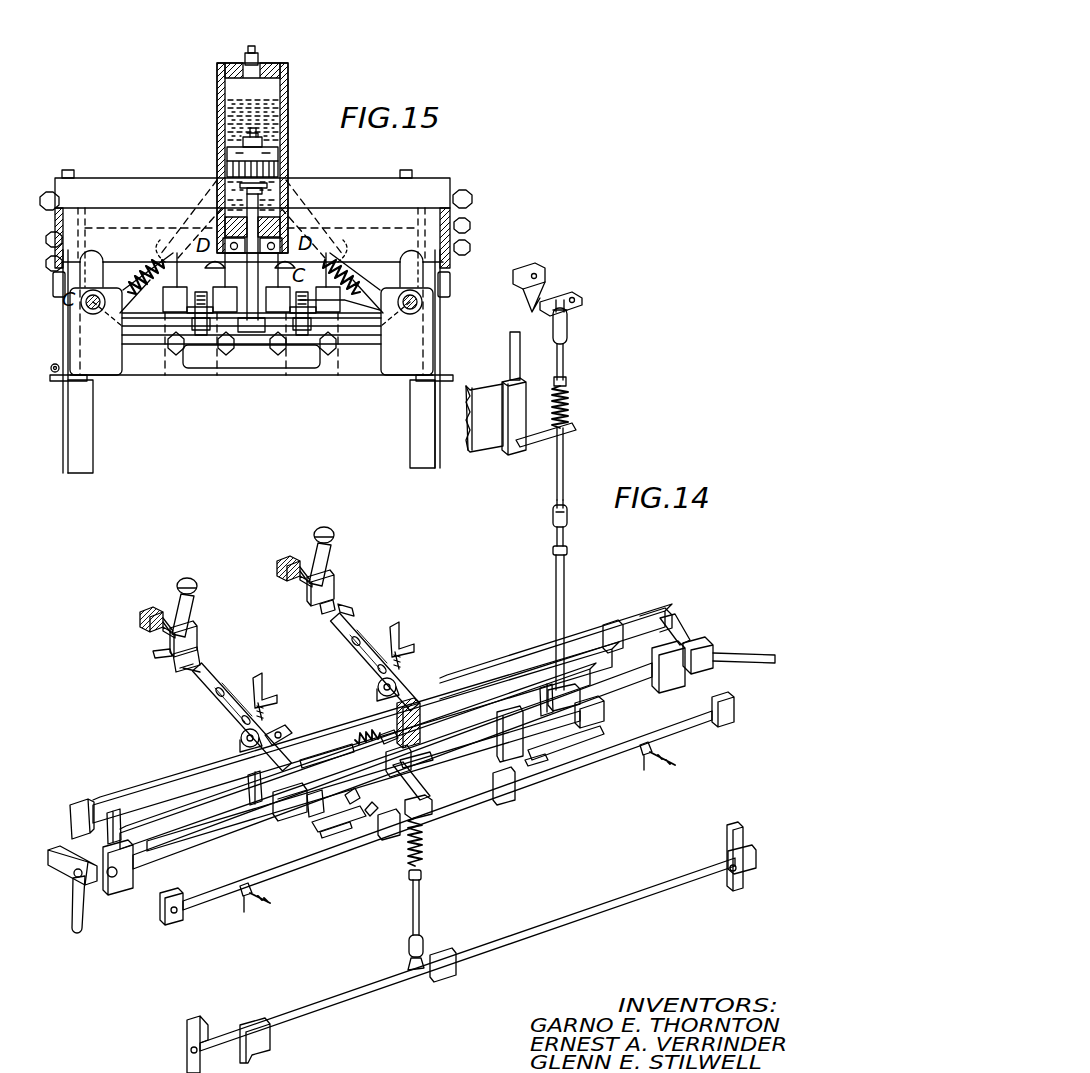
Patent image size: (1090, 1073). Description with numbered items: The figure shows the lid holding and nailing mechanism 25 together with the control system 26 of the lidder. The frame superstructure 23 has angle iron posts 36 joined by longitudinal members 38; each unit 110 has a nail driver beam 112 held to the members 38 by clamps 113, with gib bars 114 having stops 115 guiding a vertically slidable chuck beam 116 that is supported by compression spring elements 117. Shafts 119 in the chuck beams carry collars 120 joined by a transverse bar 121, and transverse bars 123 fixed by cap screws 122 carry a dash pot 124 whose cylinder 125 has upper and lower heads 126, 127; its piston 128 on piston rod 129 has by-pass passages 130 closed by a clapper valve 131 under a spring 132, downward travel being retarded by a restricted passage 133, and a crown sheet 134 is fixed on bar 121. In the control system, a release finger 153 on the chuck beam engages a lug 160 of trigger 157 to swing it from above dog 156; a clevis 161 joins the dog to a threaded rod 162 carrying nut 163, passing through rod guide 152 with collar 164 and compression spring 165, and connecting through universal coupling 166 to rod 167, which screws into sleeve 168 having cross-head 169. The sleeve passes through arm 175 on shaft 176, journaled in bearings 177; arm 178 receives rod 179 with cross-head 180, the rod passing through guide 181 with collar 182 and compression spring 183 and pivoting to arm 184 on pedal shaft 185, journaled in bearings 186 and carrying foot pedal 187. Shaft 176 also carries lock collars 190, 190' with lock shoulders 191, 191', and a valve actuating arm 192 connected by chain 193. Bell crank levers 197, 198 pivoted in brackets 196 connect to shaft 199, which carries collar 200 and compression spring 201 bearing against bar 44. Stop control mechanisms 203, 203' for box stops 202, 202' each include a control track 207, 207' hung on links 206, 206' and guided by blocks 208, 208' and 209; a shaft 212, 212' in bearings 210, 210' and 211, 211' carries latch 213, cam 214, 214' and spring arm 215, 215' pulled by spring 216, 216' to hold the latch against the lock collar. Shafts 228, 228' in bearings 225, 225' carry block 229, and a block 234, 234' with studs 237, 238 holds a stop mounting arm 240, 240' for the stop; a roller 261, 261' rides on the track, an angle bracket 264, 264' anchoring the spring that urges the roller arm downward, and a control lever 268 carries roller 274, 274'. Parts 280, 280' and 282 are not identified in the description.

In FIG. 15, the lid holding and nailing mechanism 25 is at (213, 65).
In FIG. 15, the upper head 126 is at (256, 66).
In FIG. 15, the dash pot 124 is at (300, 84).
In FIG. 15, the cylinder 125 is at (218, 92).
In FIG. 15, the by-pass passages 130 is at (218, 150).
In FIG. 15, the piston 128 is at (227, 163).
In FIG. 15, the spring 132 is at (228, 183).
In FIG. 15, the restricted passage 133 is at (240, 200).
In FIG. 15, the lower head 127 is at (228, 222).
In FIG. 15, the clapper valve 131 is at (283, 184).
In FIG. 15, the nail driver beam 112 is at (372, 186).
In FIG. 15, the transverse bars 123 is at (330, 214).
In FIG. 15, the unit 110 is at (469, 162).
In FIG. 15, the clamps 113 is at (48, 205).
In FIG. 15, the cap screws 122 is at (56, 256).
In FIG. 15, the longitudinal members 38 is at (46, 240).
In FIG. 15, the superstructure 23 is at (58, 472).
In FIG. 15, the compression spring elements 117 is at (142, 270).
In FIG. 15, the piston rod 129 is at (247, 272).
In FIG. 15, the transverse bar 121 is at (340, 298).
In FIG. 15, the collars 120 is at (85, 305).
In FIG. 15, the shafts 119 is at (85, 315).
In FIG. 15, the gib bar 114 is at (68, 348).
In FIG. 15, the stop 115 is at (54, 378).
In FIG. 15, the chuck beam 116 is at (155, 372).
In FIG. 14, the chuck beam 116 is at (490, 438).
In FIG. 15, the crown sheet 134 is at (295, 368).
In FIG. 15, the angle iron posts 36 is at (93, 455).
In FIG. 14, the lug 160 is at (540, 262).
In FIG. 14, the trigger 157 is at (548, 280).
In FIG. 14, the dog 156 is at (586, 296).
In FIG. 14, the clevis 161 is at (568, 330).
In FIG. 14, the threaded rod 162 is at (566, 360).
In FIG. 14, the nut 163 is at (567, 382).
In FIG. 14, the compression spring 165 is at (568, 400).
In FIG. 14, the apertured rod guide 152 is at (566, 432).
In FIG. 14, the collar 164 is at (576, 434).
In FIG. 14, the release finger 153 is at (512, 366).
In FIG. 14, the universal coupling 166 is at (552, 515).
In FIG. 14, the rod 167 is at (553, 549).
In FIG. 14, the sleeve 168 is at (565, 580).
In FIG. 14, the control track 207 is at (356, 732).
In FIG. 14, the blocks 208 is at (95, 800).
In FIG. 14, the blocks 208' is at (641, 609).
In FIG. 14, the links 206 is at (358, 764).
In FIG. 14, the control track 207' is at (556, 651).
In FIG. 14, the links 206' is at (594, 617).
In FIG. 14, the shaft 199 is at (630, 640).
In FIG. 14, the control system 26 is at (689, 626).
In FIG. 14, the brackets 196 is at (700, 640).
In FIG. 14, the bell crank lever 198 is at (765, 660).
In FIG. 14, the bell crank lever 197 is at (84, 922).
In FIG. 14, the lock collar 190 is at (363, 781).
In FIG. 14, the lock collar 190' is at (534, 734).
In FIG. 14, the lock shoulder 191 is at (277, 819).
In FIG. 14, the lock shoulder 191' is at (495, 735).
In FIG. 14, the short chain 193 is at (310, 828).
In FIG. 14, the cross-head 169 is at (585, 720).
In FIG. 14, the arm 175 is at (590, 700).
In FIG. 14, the shaft 176 is at (625, 683).
In FIG. 14, the bearings 177 is at (118, 895).
In FIG. 14, the arm 178 is at (414, 770).
In FIG. 14, the cross-head 180 is at (422, 795).
In FIG. 14, the valve actuating arm 192 is at (335, 764).
In FIG. 14, the control lever 268 is at (369, 791).
In FIG. 14, the roller 274 is at (383, 806).
In FIG. 14, the apertured guide 181 is at (432, 818).
In FIG. 14, the compression spring 183 is at (424, 845).
In FIG. 14, the collar 182 is at (422, 874).
In FIG. 14, the rod 179 is at (420, 905).
In FIG. 14, the arm 184 is at (432, 950).
In FIG. 14, the pedal shaft 185 is at (512, 940).
In FIG. 14, the bearings 186 is at (186, 1032).
In FIG. 14, the foot pedal 187 is at (272, 1036).
In FIG. 14, the shaft 212 is at (447, 831).
In FIG. 14, the shaft 212' is at (714, 747).
In FIG. 14, the bearing 210 is at (179, 920).
In FIG. 14, the bearing 210' is at (755, 709).
In FIG. 14, the spring arm 215 is at (256, 906).
In FIG. 14, the spring arm 215' is at (658, 763).
In FIG. 14, the spring 216 is at (294, 909).
In FIG. 14, the spring 216' is at (685, 772).
In FIG. 14, the latch 213 is at (318, 842).
In FIG. 14, the cam 214 is at (327, 877).
In FIG. 14, the cam 214' is at (576, 765).
In FIG. 14, the bearing 211 is at (381, 849).
In FIG. 14, the bearing 211' is at (521, 799).
In FIG. 14, the roller 274' is at (556, 793).
In FIG. 14, the box stop 202 is at (188, 572).
In FIG. 14, the box stop 202' is at (333, 521).
In FIG. 14, the stop mounting arm 240 is at (208, 612).
In FIG. 14, the stop mounting arm 240' is at (356, 550).
In FIG. 14, the block 234 is at (209, 633).
In FIG. 14, the block 234' is at (357, 570).
In FIG. 14, the block 229 is at (200, 658).
In FIG. 14, the bearing 225 is at (138, 604).
In FIG. 14, the bearing 225' is at (286, 563).
In FIG. 14, the stud 237 is at (163, 632).
In FIG. 14, the stud 238 is at (153, 656).
In FIG. 14, the pin 280 is at (164, 678).
In FIG. 14, the pin 280' is at (358, 587).
In FIG. 14, the shaft 228 is at (242, 710).
In FIG. 14, the shaft 228' is at (356, 662).
In FIG. 14, the angle bracket 264 is at (274, 692).
In FIG. 14, the angle bracket 264' is at (430, 635).
In FIG. 14, the stop control mechanism 203 is at (165, 698).
In FIG. 14, the stop control mechanism 203' is at (432, 596).
In FIG. 14, the link 282 is at (230, 700).
In FIG. 14, the roller 261 is at (222, 738).
In FIG. 14, the roller 261' is at (431, 664).
In FIG. 14, the blocks 209 is at (278, 732).
In FIG. 14, the bar 44 is at (395, 705).
In FIG. 14, the coiled compression spring 201 is at (386, 730).
In FIG. 14, the collar 200 is at (355, 746).